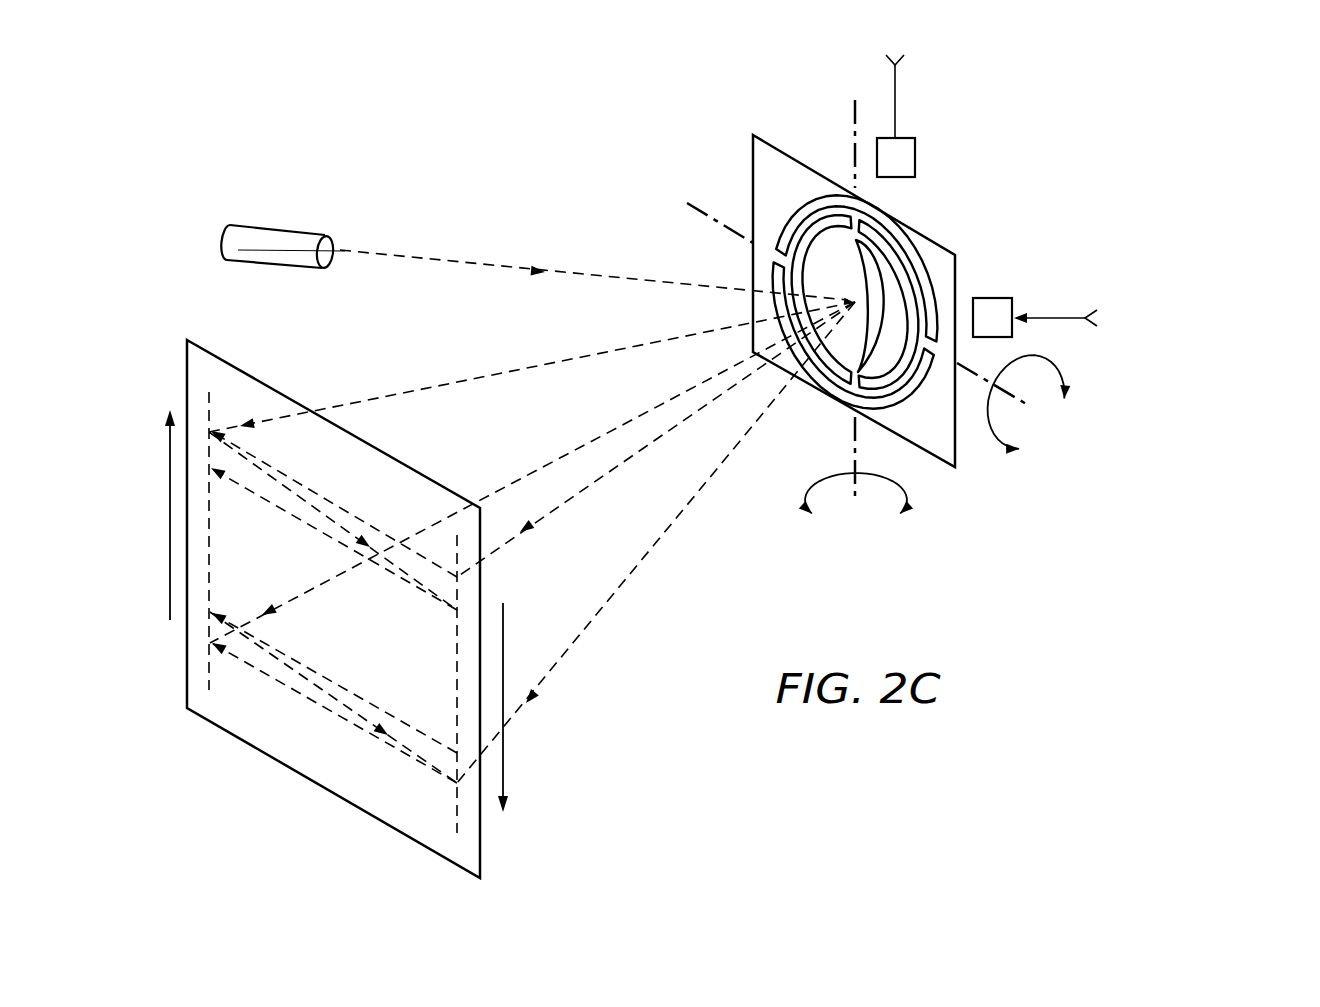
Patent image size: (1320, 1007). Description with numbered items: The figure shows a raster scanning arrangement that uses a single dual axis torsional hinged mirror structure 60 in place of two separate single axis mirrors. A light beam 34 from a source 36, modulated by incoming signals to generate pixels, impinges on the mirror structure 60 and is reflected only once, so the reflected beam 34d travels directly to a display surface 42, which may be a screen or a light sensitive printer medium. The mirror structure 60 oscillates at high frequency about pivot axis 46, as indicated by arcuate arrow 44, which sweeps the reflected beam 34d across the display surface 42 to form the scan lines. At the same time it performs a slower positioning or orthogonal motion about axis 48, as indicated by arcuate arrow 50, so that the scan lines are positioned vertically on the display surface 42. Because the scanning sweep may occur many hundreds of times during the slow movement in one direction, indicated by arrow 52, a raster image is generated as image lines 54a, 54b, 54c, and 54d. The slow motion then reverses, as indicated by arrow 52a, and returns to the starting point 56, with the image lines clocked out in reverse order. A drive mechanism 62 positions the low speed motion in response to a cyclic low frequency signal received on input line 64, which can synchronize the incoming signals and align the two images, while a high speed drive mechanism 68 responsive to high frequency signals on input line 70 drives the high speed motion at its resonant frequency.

The light beam 34 is at (455, 263).
The reflected beam 34d is at (470, 375).
The source 36 is at (282, 228).
The display surface 42 is at (353, 795).
The arcuate arrow 44 is at (803, 497).
The pivot axis 46 is at (850, 118).
The axis 48 is at (700, 205).
The arcuate arrow 50 is at (1003, 450).
The arrow 52 is at (505, 758).
The arrow 52a is at (168, 522).
The image line 54a is at (290, 474).
The image line 54b is at (282, 510).
The image line 54c is at (385, 709).
The image line 54d is at (283, 690).
The starting point 56 is at (457, 808).
The mirror structure 60 is at (970, 222).
The drive mechanism 62 is at (990, 297).
The input line 64 is at (1050, 318).
The high speed drive mechanism 68 is at (917, 158).
The input line 70 is at (897, 112).